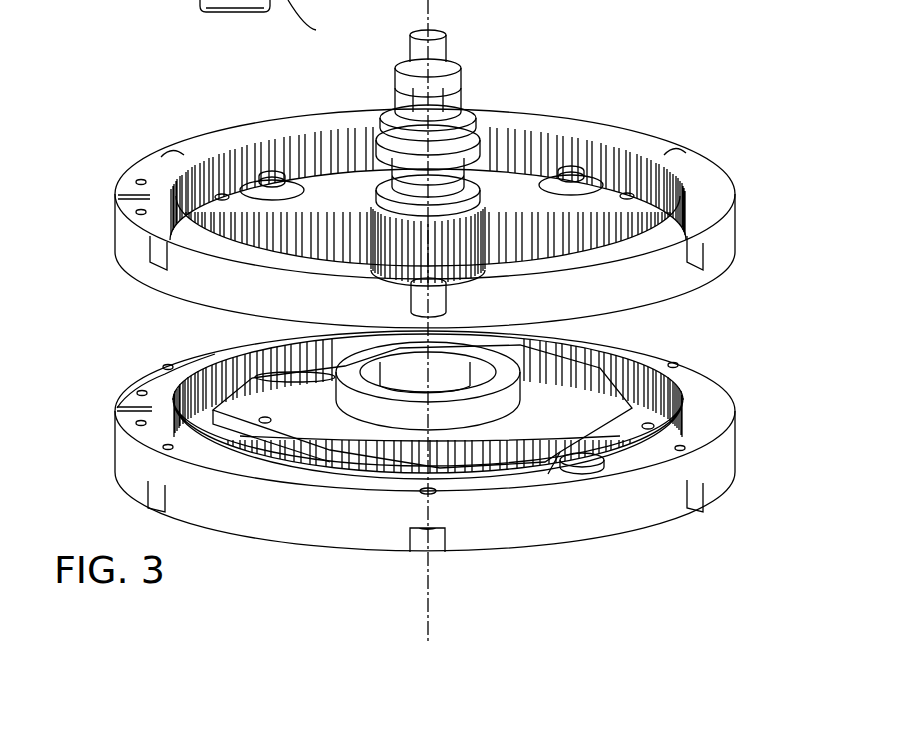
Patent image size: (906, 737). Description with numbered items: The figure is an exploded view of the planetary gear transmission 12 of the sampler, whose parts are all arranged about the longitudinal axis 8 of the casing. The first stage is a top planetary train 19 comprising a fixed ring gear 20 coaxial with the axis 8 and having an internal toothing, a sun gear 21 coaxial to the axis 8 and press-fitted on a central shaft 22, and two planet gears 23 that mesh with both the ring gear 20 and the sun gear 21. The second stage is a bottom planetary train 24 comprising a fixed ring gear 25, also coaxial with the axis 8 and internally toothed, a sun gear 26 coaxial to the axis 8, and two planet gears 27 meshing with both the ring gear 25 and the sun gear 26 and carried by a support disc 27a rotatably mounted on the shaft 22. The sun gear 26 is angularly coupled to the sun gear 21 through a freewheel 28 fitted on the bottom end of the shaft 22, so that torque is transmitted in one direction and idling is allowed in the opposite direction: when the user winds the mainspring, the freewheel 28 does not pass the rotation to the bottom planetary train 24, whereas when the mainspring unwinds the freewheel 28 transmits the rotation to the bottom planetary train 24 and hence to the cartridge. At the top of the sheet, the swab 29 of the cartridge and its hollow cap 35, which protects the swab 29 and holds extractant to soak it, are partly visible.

The longitudinal axis 8 is at (430, 621).
The planetary gear transmission 12 is at (784, 264).
The top planetary train 19 is at (746, 215).
The fixed ring gear 20 is at (717, 270).
The sun gear 21 is at (447, 220).
The central shaft 22 is at (433, 50).
The planet gears 23 is at (233, 180).
The bottom planetary train 24 is at (743, 444).
The fixed ring gear 25 is at (713, 493).
The sun gear 26 is at (380, 475).
The planet gears 27 is at (213, 347).
The support disc 27a is at (540, 430).
The freewheel 28 is at (400, 372).
The swab 29 is at (182, 0).
The hollow cap 35 is at (316, 30).